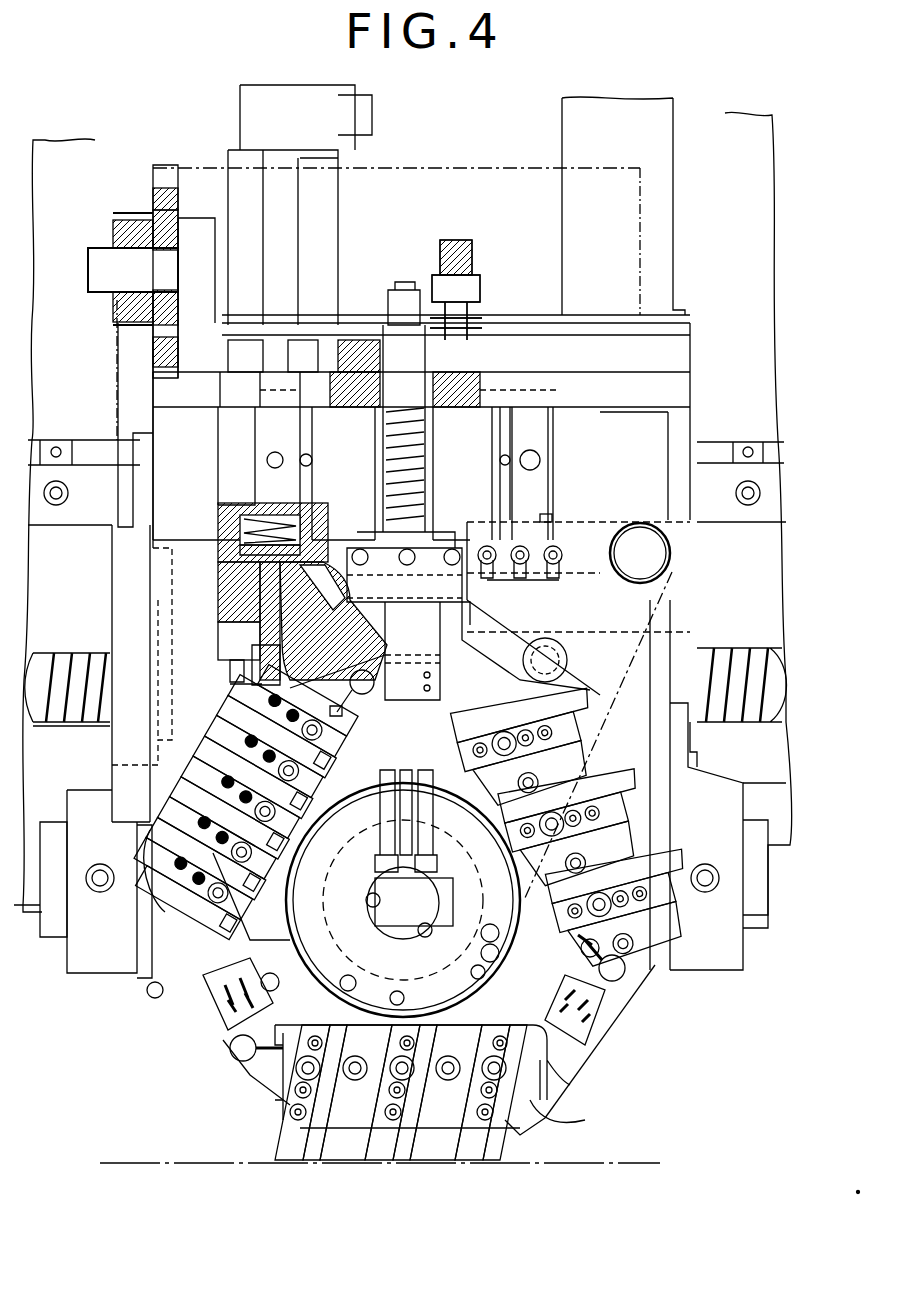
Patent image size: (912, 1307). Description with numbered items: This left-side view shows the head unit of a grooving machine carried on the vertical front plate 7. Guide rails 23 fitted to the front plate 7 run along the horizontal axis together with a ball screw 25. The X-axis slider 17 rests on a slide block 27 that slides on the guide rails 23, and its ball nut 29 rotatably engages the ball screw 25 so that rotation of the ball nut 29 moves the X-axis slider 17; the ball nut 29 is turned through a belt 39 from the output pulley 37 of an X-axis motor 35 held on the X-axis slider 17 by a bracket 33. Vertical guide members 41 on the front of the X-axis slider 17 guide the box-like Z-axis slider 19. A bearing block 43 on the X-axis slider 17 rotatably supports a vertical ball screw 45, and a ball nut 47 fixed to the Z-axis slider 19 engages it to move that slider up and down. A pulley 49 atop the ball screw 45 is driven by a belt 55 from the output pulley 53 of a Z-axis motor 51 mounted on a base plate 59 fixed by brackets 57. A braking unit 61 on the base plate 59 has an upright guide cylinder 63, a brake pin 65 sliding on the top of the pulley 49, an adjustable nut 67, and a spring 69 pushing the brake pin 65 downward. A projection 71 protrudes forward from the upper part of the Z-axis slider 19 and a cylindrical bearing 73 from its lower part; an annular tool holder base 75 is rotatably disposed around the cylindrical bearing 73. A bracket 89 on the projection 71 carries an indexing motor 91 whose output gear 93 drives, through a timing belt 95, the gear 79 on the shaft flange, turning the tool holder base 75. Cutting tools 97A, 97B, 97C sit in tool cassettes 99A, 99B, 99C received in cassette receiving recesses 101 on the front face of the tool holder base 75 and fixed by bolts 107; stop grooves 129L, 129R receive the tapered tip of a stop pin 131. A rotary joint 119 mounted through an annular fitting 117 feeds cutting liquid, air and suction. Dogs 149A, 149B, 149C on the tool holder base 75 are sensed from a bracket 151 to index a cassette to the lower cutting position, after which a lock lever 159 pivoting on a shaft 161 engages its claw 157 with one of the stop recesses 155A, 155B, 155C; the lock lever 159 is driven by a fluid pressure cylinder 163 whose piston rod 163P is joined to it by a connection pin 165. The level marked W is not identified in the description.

The front plate 7 is at (736, 206).
The X-axis slider 17 is at (632, 415).
The Z-axis slider 19 is at (596, 740).
The guide rails 23 is at (83, 473).
The ball screw 25 is at (743, 663).
The slide block 27 is at (52, 935).
The ball nut 29 is at (125, 778).
The bracket 33 is at (166, 175).
The X-axis motor 35 is at (398, 168).
The output pulley 37 is at (128, 212).
The belt 39 is at (112, 378).
The guide members 41 is at (265, 440).
The bearing block 43 is at (343, 473).
The ball screw 45 is at (405, 447).
The ball nut 47 is at (437, 537).
The pulley 49 is at (350, 340).
The Z-axis motor 51 is at (328, 220).
The output pulley 53 is at (250, 325).
The belt 55 is at (312, 330).
The brackets 57 is at (285, 390).
The base plate 59 is at (555, 330).
The braking unit 61 is at (480, 240).
The guide cylinder 63 is at (478, 315).
The brake pin 65 is at (438, 315).
The adjustable nut 67 is at (443, 255).
The spring 69 is at (478, 295).
The projection 71 is at (546, 520).
The cylindrical bearing 73 is at (300, 942).
The tool holder base 75 is at (562, 1076).
The gear 79 is at (483, 985).
The bracket 89 is at (582, 495).
The indexing motor 91 is at (702, 640).
The output gear 93 is at (672, 570).
The timing belt 95 is at (693, 725).
The cutting tool 97A is at (300, 1152).
The cutting tool 97B is at (660, 835).
The cutting tool 97C is at (138, 838).
The tool cassette 99A is at (528, 1105).
The tool cassette 99B is at (670, 935).
The tool cassette 99C is at (165, 912).
The cassette receiving recesses 101 is at (148, 990).
The bolts 107 is at (348, 1095).
The annular fitting 117 is at (388, 940).
The rotary joint 119 is at (427, 917).
The stop groove 129L is at (272, 1092).
The stop groove 129R is at (545, 1120).
The stop pin 131 is at (555, 1048).
The dog 149A is at (482, 657).
The dog 149B is at (195, 1012).
The dog 149C is at (605, 1030).
The bracket 151 is at (398, 770).
The stop recess 155A is at (360, 708).
The stop recess 155B is at (218, 1045).
The stop recess 155C is at (622, 988).
The claw 157 is at (368, 628).
The lock lever 159 is at (487, 597).
The shaft 161 is at (598, 736).
The fluid pressure cylinder 163 is at (230, 548).
The piston rod 163P is at (230, 600).
The connection pin 165 is at (235, 686).
The workpiece line W is at (133, 1160).